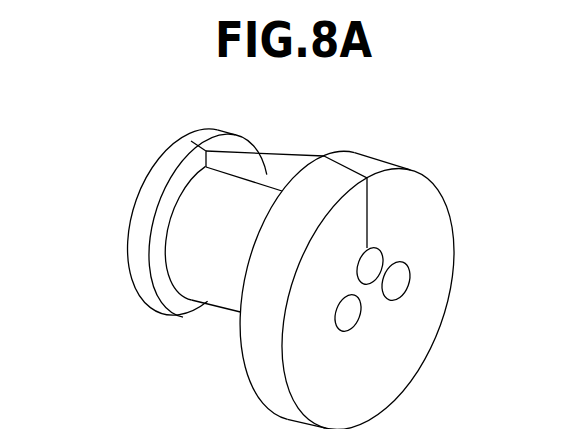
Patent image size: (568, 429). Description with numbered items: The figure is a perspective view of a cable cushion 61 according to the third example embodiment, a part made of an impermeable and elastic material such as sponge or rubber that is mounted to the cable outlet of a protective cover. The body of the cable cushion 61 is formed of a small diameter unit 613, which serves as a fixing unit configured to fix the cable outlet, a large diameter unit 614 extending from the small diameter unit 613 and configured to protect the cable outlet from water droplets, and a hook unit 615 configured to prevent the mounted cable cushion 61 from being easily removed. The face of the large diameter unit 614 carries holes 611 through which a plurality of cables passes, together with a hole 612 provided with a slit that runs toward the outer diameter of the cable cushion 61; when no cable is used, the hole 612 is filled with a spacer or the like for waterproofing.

The cable cushion 61 is at (114, 183).
The holes 611 is at (360, 315).
The hole with a slit 612 is at (373, 258).
The small diameter unit 613 is at (257, 203).
The large diameter unit 614 is at (373, 158).
The hook unit 615 is at (172, 165).